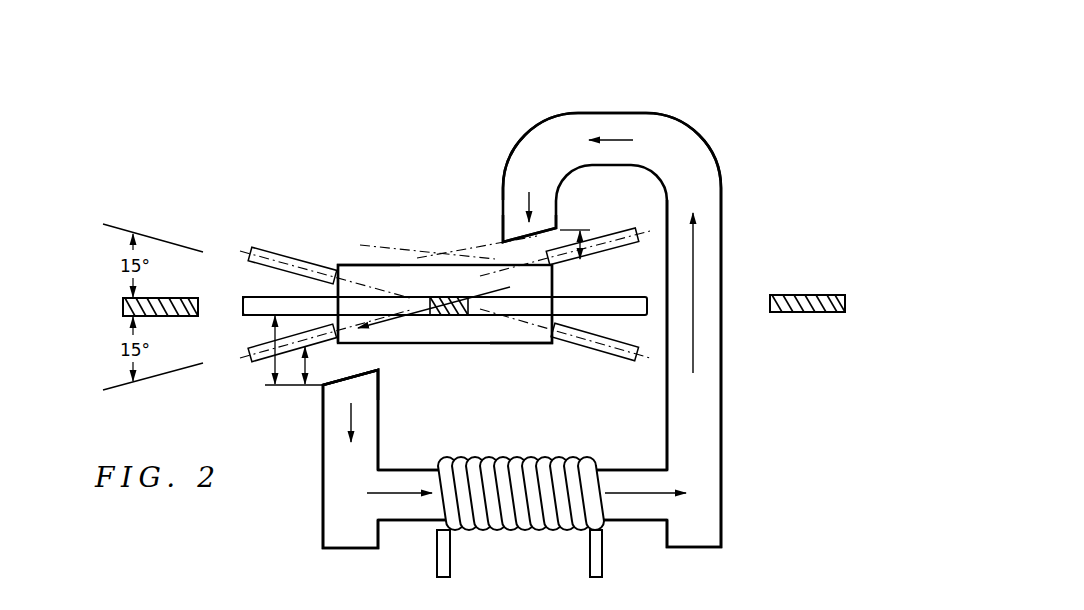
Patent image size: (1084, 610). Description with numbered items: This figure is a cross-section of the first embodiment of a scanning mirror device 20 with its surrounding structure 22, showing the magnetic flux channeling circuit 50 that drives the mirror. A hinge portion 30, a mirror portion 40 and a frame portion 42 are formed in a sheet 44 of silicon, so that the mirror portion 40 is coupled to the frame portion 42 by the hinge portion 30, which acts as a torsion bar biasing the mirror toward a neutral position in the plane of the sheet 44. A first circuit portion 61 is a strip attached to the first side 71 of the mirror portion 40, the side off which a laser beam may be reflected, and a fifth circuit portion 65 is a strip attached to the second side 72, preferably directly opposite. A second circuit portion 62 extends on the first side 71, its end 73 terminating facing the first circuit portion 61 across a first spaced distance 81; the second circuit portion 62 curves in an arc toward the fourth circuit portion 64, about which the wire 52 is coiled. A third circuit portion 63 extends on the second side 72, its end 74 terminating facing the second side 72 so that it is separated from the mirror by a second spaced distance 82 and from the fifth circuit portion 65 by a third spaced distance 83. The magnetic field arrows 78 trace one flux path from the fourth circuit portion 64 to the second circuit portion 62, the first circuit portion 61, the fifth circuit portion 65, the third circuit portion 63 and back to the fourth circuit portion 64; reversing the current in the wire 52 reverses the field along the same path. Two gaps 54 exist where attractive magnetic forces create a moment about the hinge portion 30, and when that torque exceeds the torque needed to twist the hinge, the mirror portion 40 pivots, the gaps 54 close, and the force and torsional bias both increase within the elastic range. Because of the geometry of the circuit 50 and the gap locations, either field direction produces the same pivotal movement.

The linear actuator 20 is at (526, 305).
The outer yoke 22 is at (724, 161).
The hinge portion 30 is at (497, 318).
The mirror portion 40 is at (298, 297).
The frame portion 42 is at (122, 308).
The sheet 44 is at (848, 305).
The magnetic flux channeling circuit 50 is at (724, 371).
The wire 52 is at (605, 553).
The gaps 54 is at (497, 259).
The first circuit portion 61 is at (362, 271).
The second circuit portion 62 is at (571, 126).
The third circuit portion 63 is at (330, 513).
The fourth circuit portion 64 is at (408, 522).
The fifth circuit portion 65 is at (527, 335).
The first side 71 is at (253, 297).
The second side 72 is at (258, 316).
The end 73 is at (500, 256).
The end 74 is at (385, 372).
The magnetic field arrows 78 is at (617, 138).
The first spaced distance 81 is at (586, 247).
The second spaced distance 82 is at (273, 370).
The third spaced distance 83 is at (302, 375).